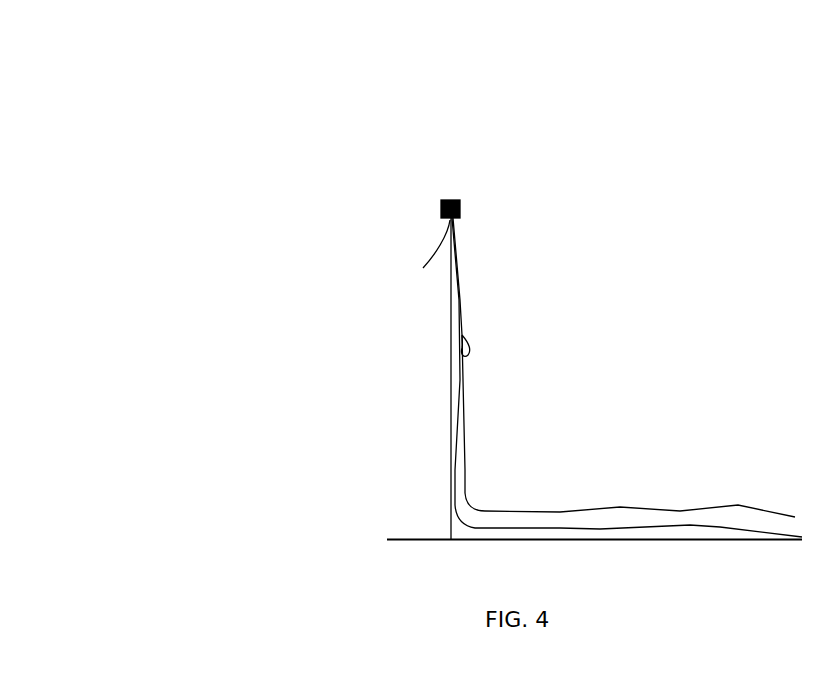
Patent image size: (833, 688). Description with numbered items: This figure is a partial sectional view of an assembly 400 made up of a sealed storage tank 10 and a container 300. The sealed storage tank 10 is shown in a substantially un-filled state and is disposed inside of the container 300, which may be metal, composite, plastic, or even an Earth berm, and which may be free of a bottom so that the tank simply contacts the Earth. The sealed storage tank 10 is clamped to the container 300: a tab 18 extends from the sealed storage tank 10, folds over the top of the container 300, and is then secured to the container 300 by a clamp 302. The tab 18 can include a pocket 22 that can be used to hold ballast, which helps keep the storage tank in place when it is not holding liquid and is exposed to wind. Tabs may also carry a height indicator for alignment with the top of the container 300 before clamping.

The assembly 400 is at (371, 212).
The container 300 is at (436, 521).
The clamp 302 is at (467, 188).
The tab 18 is at (467, 267).
The sealed storage tank 10 is at (470, 400).
The pocket 22 is at (484, 341).